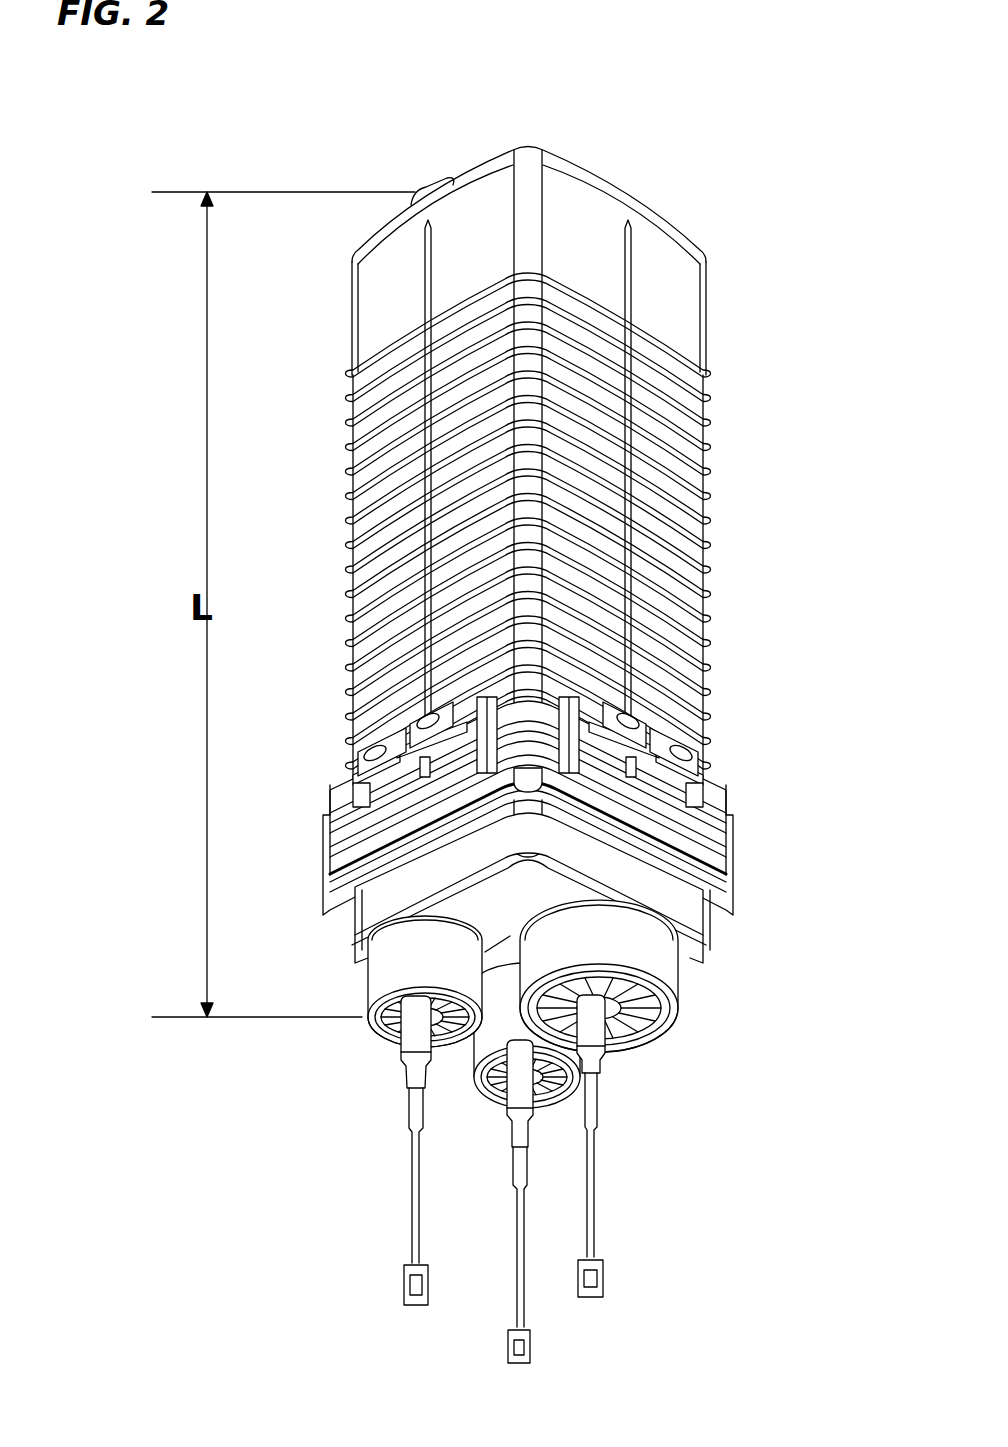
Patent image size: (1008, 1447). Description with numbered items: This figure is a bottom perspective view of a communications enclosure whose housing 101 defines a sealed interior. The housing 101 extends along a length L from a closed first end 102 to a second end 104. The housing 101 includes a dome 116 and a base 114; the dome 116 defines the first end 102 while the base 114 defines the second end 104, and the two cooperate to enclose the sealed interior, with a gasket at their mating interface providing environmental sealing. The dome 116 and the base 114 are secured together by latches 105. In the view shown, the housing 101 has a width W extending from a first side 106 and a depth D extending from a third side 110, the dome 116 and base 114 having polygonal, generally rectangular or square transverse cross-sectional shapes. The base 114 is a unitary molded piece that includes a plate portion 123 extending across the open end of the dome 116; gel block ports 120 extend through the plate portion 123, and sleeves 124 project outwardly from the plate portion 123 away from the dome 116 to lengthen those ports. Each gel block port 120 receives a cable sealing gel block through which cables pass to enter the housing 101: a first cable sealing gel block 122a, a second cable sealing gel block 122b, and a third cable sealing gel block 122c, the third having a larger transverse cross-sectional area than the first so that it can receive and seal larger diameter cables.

The housing 101 is at (724, 674).
The first end 102 is at (515, 143).
The second end 104 is at (627, 1060).
The latches 105 is at (705, 772).
The first side 106 is at (378, 520).
The third side 110 is at (688, 490).
The base 114 is at (676, 906).
The dome 116 is at (688, 308).
The gel block ports 120 is at (372, 1030).
The first cable sealing gel block 122a is at (438, 1060).
The second cable sealing gel block 122b is at (495, 1118).
The third cable sealing gel block 122c is at (683, 1022).
The plate portion 123 is at (524, 919).
The sleeves 124 is at (395, 972).